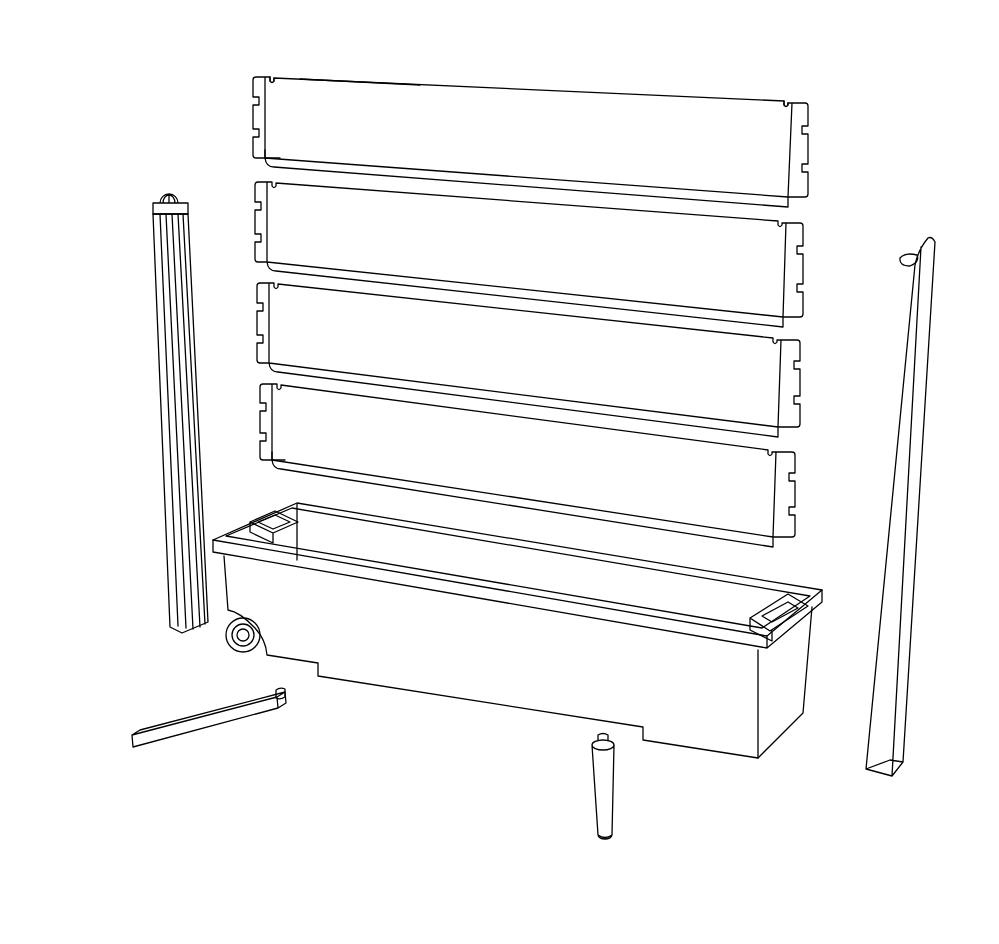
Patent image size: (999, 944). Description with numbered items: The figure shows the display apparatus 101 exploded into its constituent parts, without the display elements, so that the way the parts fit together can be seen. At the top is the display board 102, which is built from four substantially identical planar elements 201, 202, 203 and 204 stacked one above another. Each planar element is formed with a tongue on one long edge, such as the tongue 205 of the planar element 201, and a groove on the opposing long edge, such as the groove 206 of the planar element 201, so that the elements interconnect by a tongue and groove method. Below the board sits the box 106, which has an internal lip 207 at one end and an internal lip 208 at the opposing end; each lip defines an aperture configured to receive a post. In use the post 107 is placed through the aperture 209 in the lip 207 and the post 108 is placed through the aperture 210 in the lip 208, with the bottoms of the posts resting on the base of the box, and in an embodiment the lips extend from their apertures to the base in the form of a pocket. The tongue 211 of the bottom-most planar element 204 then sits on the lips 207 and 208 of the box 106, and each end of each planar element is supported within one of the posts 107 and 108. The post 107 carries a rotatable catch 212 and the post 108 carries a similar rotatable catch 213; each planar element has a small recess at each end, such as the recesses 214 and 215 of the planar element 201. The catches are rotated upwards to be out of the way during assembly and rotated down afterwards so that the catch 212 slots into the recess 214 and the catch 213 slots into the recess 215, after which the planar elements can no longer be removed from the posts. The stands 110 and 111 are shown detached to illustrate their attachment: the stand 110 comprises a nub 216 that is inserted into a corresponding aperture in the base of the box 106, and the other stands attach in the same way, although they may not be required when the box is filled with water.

The display apparatus 101 is at (87, 92).
The display board 102 is at (636, 67).
The box 106 is at (415, 683).
The post 107 is at (172, 478).
The post 108 is at (928, 480).
The stand 110 is at (207, 730).
The stand 111 is at (620, 833).
The planar element 201 is at (788, 147).
The planar element 202 is at (790, 262).
The planar element 203 is at (782, 377).
The planar element 204 is at (778, 487).
The tongue 205 is at (268, 163).
The groove 206 is at (365, 81).
The internal lip 207 is at (297, 522).
The internal lip 208 is at (800, 576).
The aperture 209 is at (262, 524).
The aperture 210 is at (787, 612).
The tongue 211 is at (273, 463).
The rotatable catch 212 is at (155, 205).
The rotatable catch 213 is at (905, 258).
The recess 214 is at (270, 78).
The recess 215 is at (786, 103).
The nub 216 is at (288, 700).